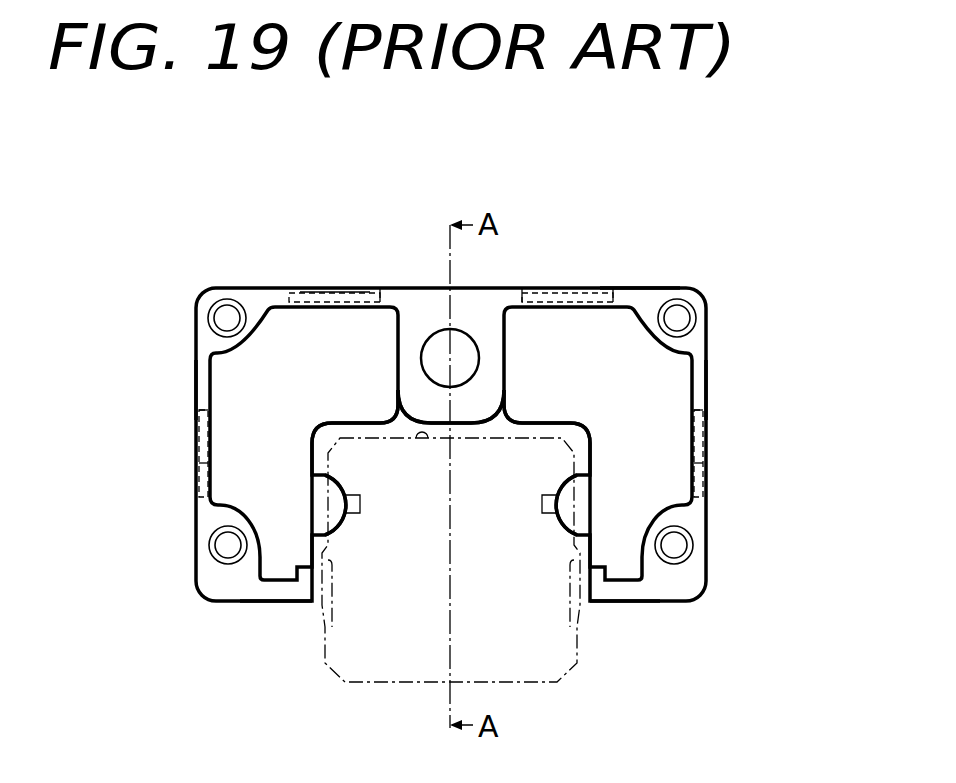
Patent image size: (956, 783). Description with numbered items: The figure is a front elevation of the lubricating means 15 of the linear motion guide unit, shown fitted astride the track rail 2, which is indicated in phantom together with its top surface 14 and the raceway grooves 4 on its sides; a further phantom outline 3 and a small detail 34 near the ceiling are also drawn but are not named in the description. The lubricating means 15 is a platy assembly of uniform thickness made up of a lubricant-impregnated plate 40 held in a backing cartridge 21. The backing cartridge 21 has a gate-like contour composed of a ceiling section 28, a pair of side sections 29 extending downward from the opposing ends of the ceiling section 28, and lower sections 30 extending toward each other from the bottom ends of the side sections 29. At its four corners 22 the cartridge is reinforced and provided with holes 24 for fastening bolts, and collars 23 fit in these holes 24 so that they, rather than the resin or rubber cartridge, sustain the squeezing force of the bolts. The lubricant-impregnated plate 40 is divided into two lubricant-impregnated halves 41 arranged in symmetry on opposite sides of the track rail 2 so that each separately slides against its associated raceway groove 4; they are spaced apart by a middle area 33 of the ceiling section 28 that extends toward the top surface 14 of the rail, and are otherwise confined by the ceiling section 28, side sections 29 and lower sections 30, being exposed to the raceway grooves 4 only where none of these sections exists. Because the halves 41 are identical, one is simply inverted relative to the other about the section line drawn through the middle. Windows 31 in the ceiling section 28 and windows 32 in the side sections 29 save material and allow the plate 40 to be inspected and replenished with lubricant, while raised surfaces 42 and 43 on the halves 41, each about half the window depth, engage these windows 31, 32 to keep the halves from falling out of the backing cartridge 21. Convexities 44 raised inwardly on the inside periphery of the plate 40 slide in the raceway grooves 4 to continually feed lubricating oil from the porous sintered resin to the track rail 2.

The lubricating means 15 is at (722, 351).
The lubricant-impregnated halves 41 is at (265, 455).
The convexities 44 is at (320, 500).
The raceway grooves 4 is at (342, 522).
The collars 23 is at (223, 300).
The holes 24 is at (213, 325).
The corners 22 is at (208, 338).
The side sections 29 is at (196, 385).
The lower sections 30 is at (274, 590).
The ceiling section 28 is at (628, 287).
The middle area 33 is at (432, 310).
The backing cartridge 21 is at (514, 292).
The recess 34 is at (462, 348).
The windows 31 is at (299, 288).
The raised surfaces 42 is at (358, 289).
The lubricant-impregnated plate 40 is at (325, 345).
The windows 32 is at (203, 427).
The raised surfaces 43 is at (200, 478).
The track rail 2 is at (424, 650).
The top surface 14 is at (428, 440).
The heat sink edge 3 is at (320, 607).